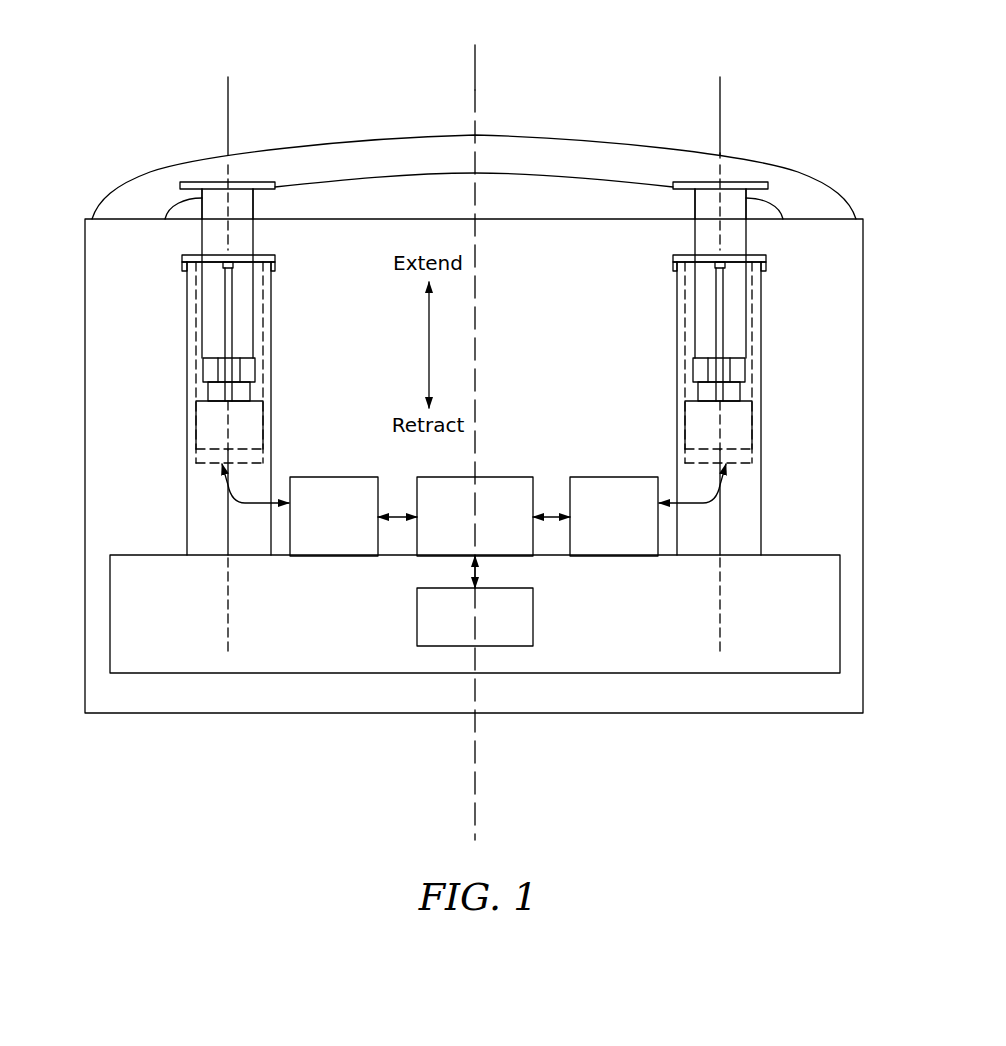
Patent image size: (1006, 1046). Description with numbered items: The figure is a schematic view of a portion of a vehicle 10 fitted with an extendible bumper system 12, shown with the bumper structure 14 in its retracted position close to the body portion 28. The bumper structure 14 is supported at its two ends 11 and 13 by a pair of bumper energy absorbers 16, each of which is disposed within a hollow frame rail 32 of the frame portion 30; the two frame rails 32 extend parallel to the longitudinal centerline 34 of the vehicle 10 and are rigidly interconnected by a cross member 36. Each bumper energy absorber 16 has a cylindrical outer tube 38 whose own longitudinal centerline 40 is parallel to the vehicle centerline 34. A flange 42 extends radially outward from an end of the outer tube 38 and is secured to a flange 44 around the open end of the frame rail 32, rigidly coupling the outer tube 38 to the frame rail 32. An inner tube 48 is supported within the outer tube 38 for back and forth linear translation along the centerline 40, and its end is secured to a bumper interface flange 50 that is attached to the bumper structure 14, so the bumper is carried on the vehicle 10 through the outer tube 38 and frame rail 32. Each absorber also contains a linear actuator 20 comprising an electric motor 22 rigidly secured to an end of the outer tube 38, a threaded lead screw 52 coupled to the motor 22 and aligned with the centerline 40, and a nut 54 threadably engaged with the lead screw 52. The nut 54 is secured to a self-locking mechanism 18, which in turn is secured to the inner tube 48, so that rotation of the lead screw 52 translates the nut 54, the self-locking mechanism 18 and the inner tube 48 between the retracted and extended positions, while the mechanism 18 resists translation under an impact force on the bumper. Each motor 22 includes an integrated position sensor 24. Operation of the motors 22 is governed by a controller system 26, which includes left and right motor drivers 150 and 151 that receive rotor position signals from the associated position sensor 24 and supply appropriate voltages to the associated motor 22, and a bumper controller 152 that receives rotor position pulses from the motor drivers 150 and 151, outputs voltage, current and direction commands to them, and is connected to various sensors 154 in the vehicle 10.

The vehicle 10 is at (918, 400).
The end of bumper structure 11 is at (748, 165).
The extendible bumper system 12 is at (800, 273).
The end of bumper structure 13 is at (198, 168).
The bumper structure 14 is at (788, 173).
The bumper energy absorber 16 is at (267, 398).
The self-locking mechanism 18 is at (250, 360).
The linear actuator 20 is at (187, 409).
The electric motor 22 is at (258, 418).
The position sensor 24 is at (205, 458).
The controller system 26 is at (542, 425).
The body portion 28 is at (863, 295).
The frame portion 30 is at (768, 530).
The hollow frame rail 32 is at (187, 500).
The longitudinal centerline 34 is at (478, 78).
The cross member 36 is at (840, 590).
The outer tube 38 is at (266, 298).
The longitudinal centerline of outer tube 40 is at (228, 100).
The flange 42 is at (275, 258).
The flange 44 is at (275, 266).
The inner tube 48 is at (253, 205).
The bumper interface flange 50 is at (180, 186).
The threaded lead screw 52 is at (225, 285).
The nut 54 is at (218, 362).
The left motor driver 150 is at (345, 477).
The right motor driver 151 is at (603, 477).
The bumper controller 152 is at (496, 477).
The sensors 154 is at (533, 613).